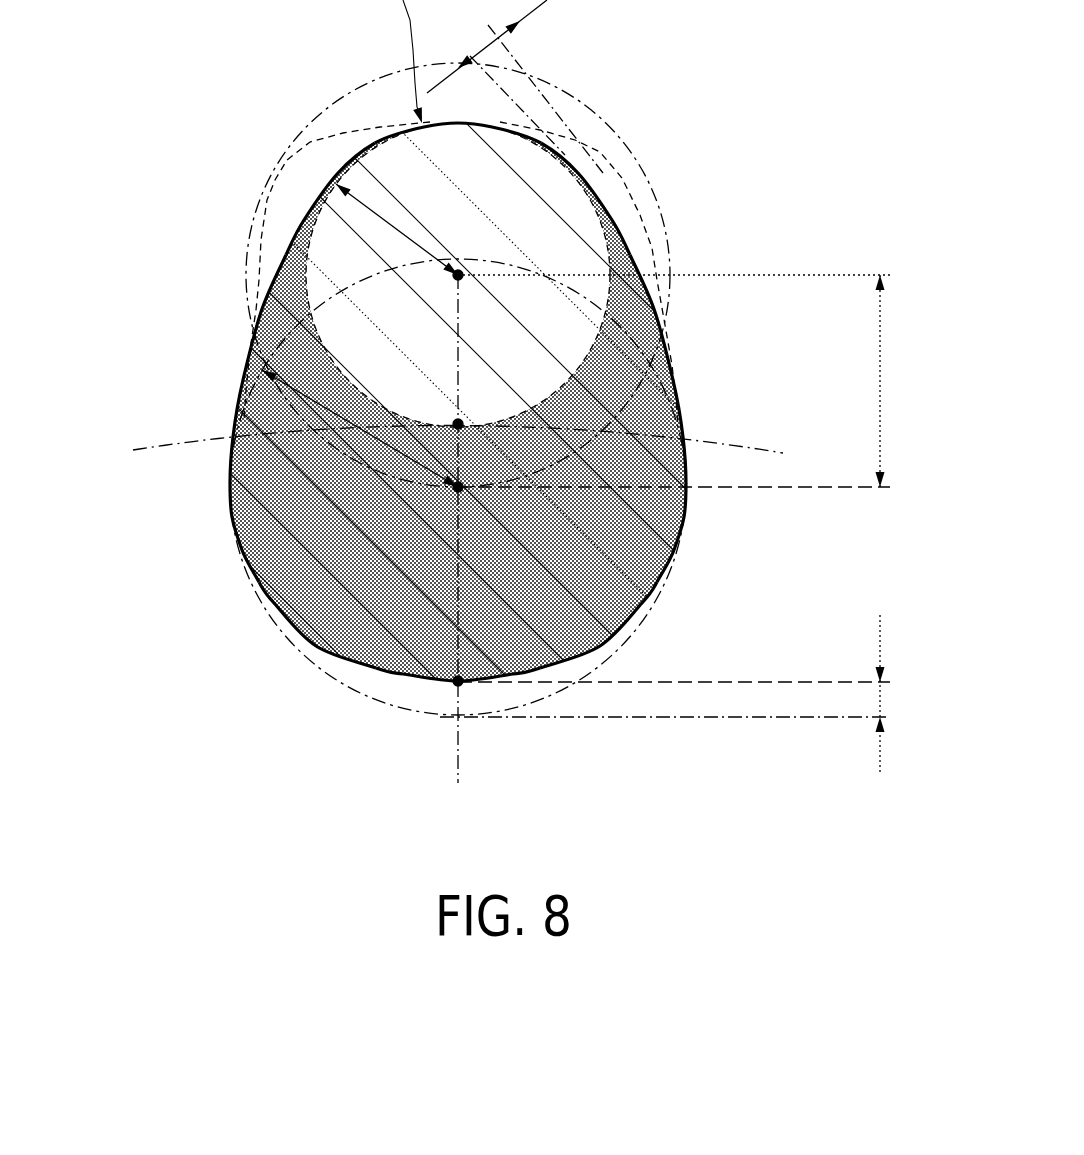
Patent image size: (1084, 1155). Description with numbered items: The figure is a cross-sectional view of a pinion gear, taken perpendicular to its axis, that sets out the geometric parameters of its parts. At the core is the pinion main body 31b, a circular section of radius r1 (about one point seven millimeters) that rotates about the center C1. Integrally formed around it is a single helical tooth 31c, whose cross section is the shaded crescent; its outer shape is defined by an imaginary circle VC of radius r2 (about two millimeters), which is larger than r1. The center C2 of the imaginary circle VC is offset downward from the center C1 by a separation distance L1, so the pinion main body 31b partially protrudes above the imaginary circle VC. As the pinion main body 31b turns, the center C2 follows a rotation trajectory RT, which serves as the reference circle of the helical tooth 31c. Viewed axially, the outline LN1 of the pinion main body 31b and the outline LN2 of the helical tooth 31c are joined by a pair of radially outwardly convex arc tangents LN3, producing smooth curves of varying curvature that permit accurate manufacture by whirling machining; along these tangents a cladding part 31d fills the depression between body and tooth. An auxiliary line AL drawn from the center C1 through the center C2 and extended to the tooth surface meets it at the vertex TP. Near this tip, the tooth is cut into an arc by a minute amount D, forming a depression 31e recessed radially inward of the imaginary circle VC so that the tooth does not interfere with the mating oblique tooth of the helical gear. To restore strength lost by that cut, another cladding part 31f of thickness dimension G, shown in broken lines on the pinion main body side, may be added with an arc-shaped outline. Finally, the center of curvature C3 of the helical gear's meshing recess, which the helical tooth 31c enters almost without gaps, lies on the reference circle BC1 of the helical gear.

The pinion main body 31b is at (435, 99).
The helical tooth 31c is at (292, 635).
The cladding part 31d is at (449, 418).
The depression 31e is at (645, 629).
The another cladding part 31f is at (483, 177).
The outline of the pinion main body LN1 is at (433, 241).
The outline of the helical tooth LN2 is at (421, 720).
The arc tangents LN3 is at (452, 273).
The rotation trajectory RT is at (471, 270).
The imaginary circle VC is at (449, 523).
The reference circle of the helical gear BC1 is at (443, 410).
The auxiliary line AL is at (504, 555).
The thickness dimension G is at (515, 86).
The radius of the pinion main body r1 is at (397, 229).
The radius of the imaginary circle r2 is at (360, 428).
The center of the pinion main body C1 is at (472, 260).
The center of the helical tooth C2 is at (475, 507).
The center of curvature of the meshing recess C3 is at (441, 409).
The vertex of the helical tooth TP is at (414, 740).
The separation distance L1 is at (674, 381).
The minute amount D is at (665, 695).